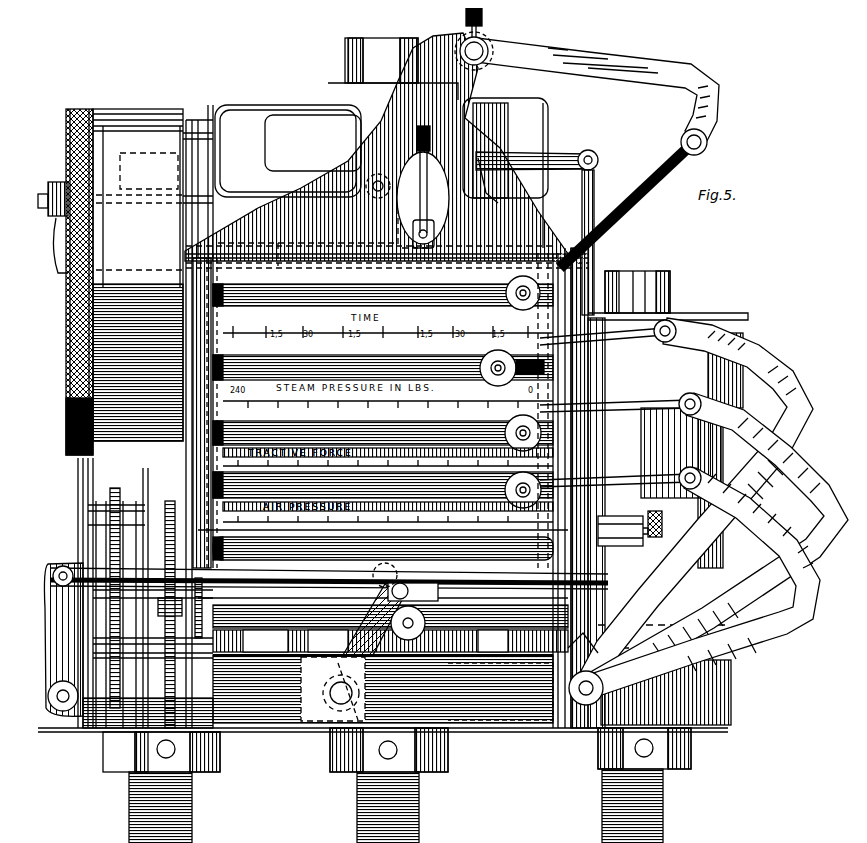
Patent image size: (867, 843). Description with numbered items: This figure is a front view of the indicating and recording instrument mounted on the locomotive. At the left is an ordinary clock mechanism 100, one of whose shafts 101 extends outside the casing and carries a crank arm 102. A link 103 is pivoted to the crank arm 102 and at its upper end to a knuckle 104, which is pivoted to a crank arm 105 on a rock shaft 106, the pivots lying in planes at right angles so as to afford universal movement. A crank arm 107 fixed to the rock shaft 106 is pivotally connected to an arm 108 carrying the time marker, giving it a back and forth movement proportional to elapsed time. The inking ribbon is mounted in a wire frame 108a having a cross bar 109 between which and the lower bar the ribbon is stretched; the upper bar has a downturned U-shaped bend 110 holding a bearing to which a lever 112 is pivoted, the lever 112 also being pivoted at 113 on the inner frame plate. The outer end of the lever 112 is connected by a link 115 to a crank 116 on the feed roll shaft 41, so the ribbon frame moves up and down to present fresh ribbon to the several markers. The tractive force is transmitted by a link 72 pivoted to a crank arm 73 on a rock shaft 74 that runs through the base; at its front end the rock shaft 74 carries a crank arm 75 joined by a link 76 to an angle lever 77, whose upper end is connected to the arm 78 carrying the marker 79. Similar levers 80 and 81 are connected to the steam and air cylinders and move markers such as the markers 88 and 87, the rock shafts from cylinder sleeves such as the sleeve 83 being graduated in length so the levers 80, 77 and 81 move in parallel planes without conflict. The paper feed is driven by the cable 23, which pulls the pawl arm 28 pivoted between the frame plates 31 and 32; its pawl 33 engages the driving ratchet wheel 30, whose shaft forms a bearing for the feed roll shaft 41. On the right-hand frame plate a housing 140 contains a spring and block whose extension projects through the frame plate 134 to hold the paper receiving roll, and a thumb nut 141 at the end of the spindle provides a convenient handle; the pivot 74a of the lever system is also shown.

The clock mechanism 100 is at (124, 282).
The shaft 101 is at (185, 190).
The crank arm 102 is at (387, 238).
The link 103 is at (428, 200).
The knuckle 104 is at (440, 122).
The crank arm 105 is at (445, 72).
The rock shaft 106 is at (481, 42).
The crank arm 107 is at (600, 48).
The arm 108 is at (640, 168).
The wire frame 108a is at (545, 128).
The cross bar 109 is at (265, 252).
The U-shaped bend 110 is at (355, 120).
The lever 112 is at (512, 148).
The pivot 113 is at (494, 180).
The link 115 is at (588, 210).
The cylinder sleeve 83 is at (500, 278).
The marker 88 is at (475, 350).
The marker 79 is at (498, 415).
The marker 87 is at (497, 482).
The arm 78 is at (632, 400).
The lever 80 is at (694, 506).
The lever 81 is at (701, 583).
The angle lever 77 is at (714, 545).
The thumb nut 141 is at (646, 515).
The housing 140 is at (623, 531).
The pivot 74a is at (565, 683).
The driving ratchet wheel 30 is at (100, 545).
The frame plate 31 is at (72, 482).
The pawl arm 28 is at (120, 493).
The pawl 33 is at (107, 480).
The frame plate 32 is at (140, 462).
The feed roll shaft 41 is at (212, 597).
The rock shaft 74 is at (383, 689).
The crank arm 73 is at (330, 715).
The cable 23 is at (383, 674).
The link 72 is at (398, 691).
The frame plate 134 is at (500, 691).
The crank arm 75 is at (373, 619).
The link 76 is at (430, 586).
The crank 116 is at (583, 642).